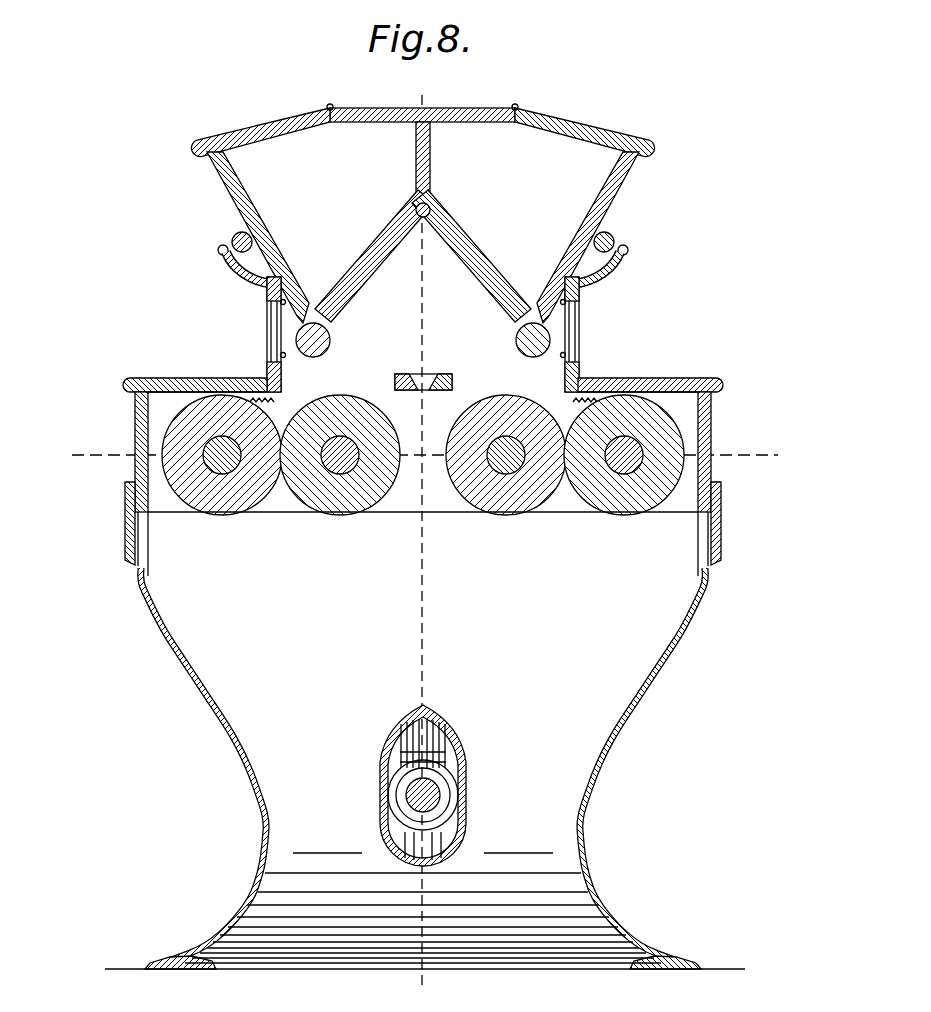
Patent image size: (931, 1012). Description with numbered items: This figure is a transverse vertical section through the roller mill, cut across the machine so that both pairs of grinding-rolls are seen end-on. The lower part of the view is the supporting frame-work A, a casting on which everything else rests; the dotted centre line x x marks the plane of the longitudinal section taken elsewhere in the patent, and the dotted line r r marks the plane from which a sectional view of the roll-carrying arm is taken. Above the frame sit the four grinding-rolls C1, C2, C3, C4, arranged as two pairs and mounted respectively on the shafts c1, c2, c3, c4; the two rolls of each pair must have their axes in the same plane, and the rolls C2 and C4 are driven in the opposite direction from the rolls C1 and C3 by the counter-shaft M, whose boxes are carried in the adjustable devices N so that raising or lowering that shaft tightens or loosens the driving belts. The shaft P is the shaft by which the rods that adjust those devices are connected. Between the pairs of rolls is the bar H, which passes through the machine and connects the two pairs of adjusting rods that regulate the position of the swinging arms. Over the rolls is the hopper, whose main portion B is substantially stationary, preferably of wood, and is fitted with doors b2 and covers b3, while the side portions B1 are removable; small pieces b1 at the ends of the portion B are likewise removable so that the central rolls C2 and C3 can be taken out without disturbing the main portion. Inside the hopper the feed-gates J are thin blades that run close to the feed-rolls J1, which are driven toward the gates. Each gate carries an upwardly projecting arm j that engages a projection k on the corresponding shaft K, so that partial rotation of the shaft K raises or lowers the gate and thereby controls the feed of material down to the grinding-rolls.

The dotted line x x is at (421, 541).
The dotted line r r is at (423, 455).
The covers b3 is at (262, 128).
The main portion of hopper B is at (423, 236).
The feed-gates J is at (304, 316).
The shaft P is at (424, 218).
The feed-rolls J1 is at (331, 337).
The shafts for operating feed-gates K is at (235, 237).
The projection k is at (218, 252).
The upwardly-projecting arm j is at (262, 270).
The doors b2 is at (270, 319).
The side portions of hopper B1 is at (168, 378).
The grinding-roll C1 is at (190, 424).
The shaft c1 is at (206, 468).
The grinding-roll C2 is at (378, 428).
The shaft c2 is at (359, 462).
The grinding-roll C3 is at (462, 428).
The shaft c3 is at (489, 461).
The grinding-roll C4 is at (660, 422).
The shaft c4 is at (640, 477).
The small removable pieces b1 is at (282, 422).
The bar H is at (444, 375).
The supporting frame-work casting A is at (425, 680).
The adjustable devices N is at (403, 757).
The counter-shaft M is at (441, 793).